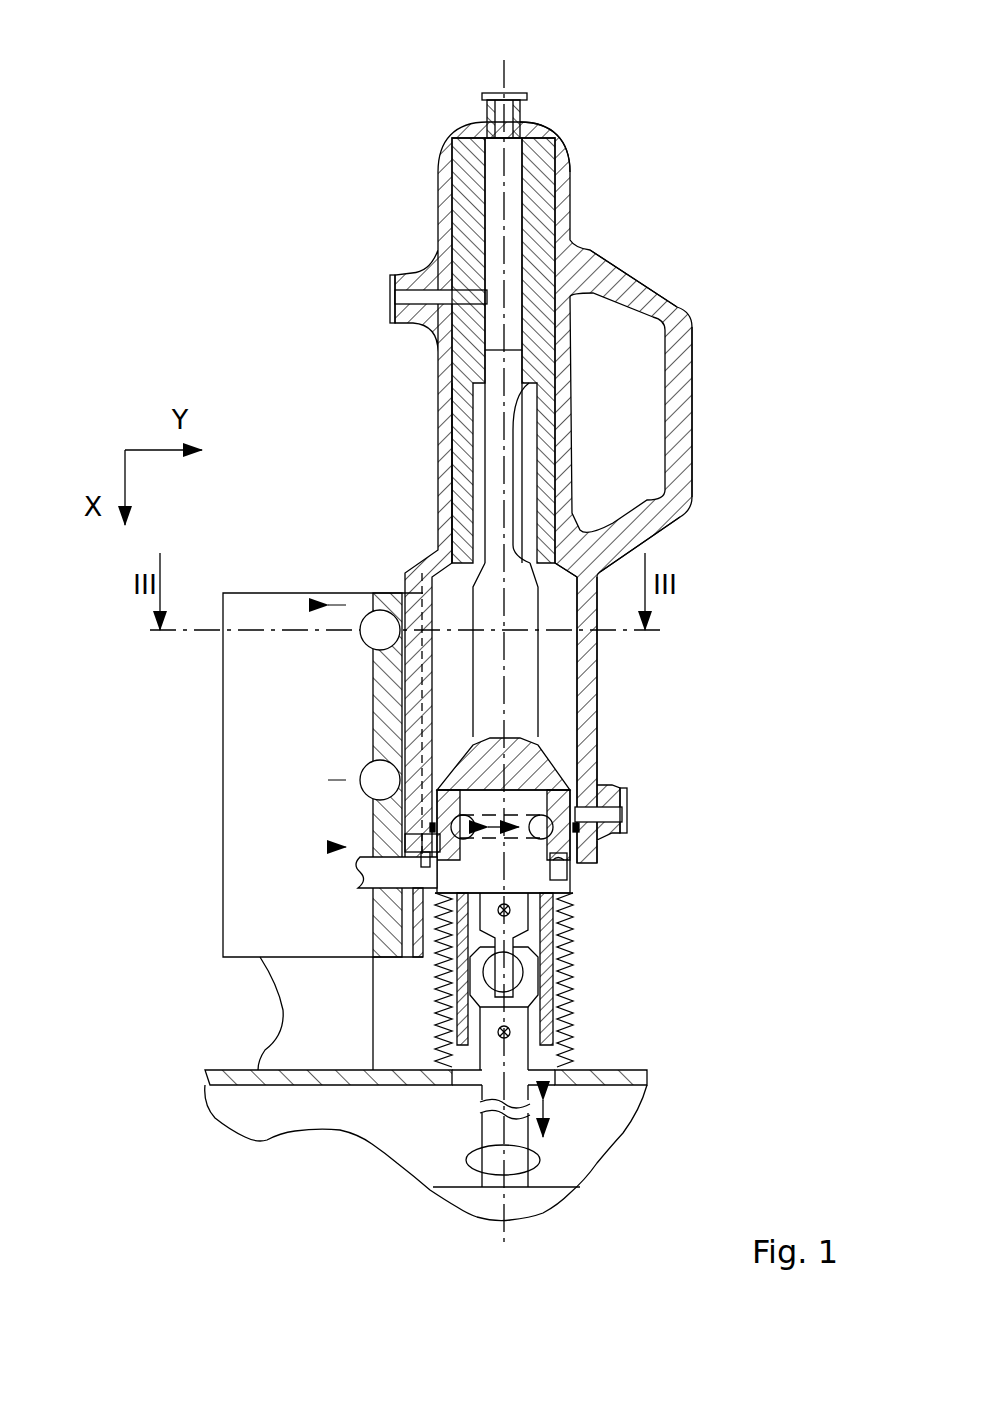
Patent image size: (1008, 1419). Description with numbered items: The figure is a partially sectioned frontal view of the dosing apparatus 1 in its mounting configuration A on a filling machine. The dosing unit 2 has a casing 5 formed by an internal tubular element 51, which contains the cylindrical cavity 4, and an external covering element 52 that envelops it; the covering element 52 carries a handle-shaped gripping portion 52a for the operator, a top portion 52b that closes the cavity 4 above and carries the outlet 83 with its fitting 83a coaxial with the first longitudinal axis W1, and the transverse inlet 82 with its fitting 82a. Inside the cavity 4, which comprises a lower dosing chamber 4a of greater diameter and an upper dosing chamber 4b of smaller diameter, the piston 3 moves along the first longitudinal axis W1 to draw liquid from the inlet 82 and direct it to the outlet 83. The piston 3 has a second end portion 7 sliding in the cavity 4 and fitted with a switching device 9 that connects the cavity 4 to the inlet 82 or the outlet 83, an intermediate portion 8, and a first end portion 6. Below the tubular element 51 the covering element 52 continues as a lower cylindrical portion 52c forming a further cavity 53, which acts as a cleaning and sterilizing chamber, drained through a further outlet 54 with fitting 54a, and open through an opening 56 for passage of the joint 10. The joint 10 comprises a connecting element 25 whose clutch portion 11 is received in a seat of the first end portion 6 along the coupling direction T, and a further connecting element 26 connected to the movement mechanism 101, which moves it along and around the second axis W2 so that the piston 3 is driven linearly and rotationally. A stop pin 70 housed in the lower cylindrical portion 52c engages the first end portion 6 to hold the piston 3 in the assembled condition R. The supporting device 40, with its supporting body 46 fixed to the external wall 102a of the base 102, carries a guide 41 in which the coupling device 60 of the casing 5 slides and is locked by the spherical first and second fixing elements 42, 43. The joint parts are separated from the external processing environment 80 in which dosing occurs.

The dosing apparatus 1 is at (223, 107).
The dosing unit 2 is at (703, 253).
The piston 3 is at (530, 547).
The cavity 4 is at (545, 520).
The lower dosing chamber 4a is at (483, 470).
The upper dosing chamber 4b is at (493, 195).
The casing 5 is at (395, 425).
The first end portion 6 is at (523, 767).
The second end portion 7 is at (497, 433).
The intermediate portion 8 is at (485, 610).
The switching device 9 is at (510, 480).
The joint 10 is at (603, 982).
The clutch portion 11 is at (445, 973).
The connecting element 25 is at (523, 922).
The further connecting element 26 is at (518, 1053).
The supporting device 40 is at (335, 562).
The guide 41 is at (405, 947).
The first fixing element 42 is at (373, 628).
The second fixing element 43 is at (373, 772).
The supporting body 46 is at (275, 843).
The internal tubular element 51 is at (540, 232).
The external covering element 52 is at (450, 355).
The gripping portion 52a is at (687, 325).
The top portion 52b is at (540, 130).
The lower cylindrical portion 52c is at (585, 702).
The further cavity 53 is at (560, 647).
The further outlet 54 is at (607, 812).
The fitting 54a is at (624, 835).
The opening 56 is at (573, 888).
The coupling device 60 is at (402, 698).
The stop pin 70 is at (435, 823).
The external processing environment 80 is at (785, 973).
The inlet 82 is at (417, 295).
The fitting 82a is at (390, 280).
The outlet 83 is at (497, 123).
The fitting 83a is at (485, 97).
The movement mechanism 101 is at (537, 1200).
The base 102 is at (260, 1113).
The external wall 102a is at (250, 1070).
The mounting configuration A is at (220, 315).
The assembled condition R is at (729, 772).
The coupling direction T is at (758, 853).
The first longitudinal axis W1 is at (505, 66).
The second axis W2 is at (503, 1240).